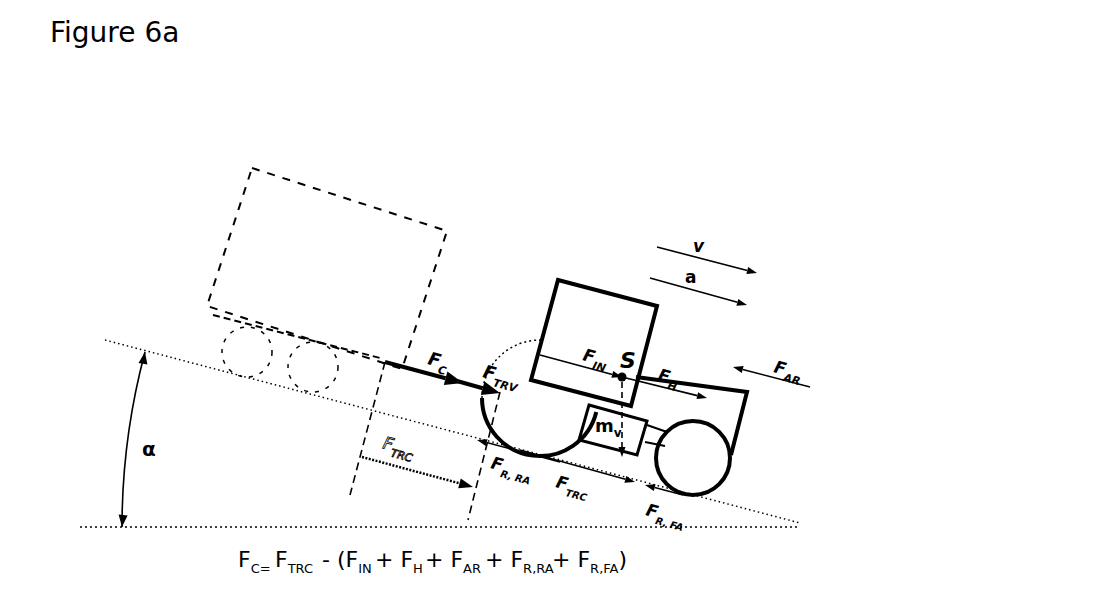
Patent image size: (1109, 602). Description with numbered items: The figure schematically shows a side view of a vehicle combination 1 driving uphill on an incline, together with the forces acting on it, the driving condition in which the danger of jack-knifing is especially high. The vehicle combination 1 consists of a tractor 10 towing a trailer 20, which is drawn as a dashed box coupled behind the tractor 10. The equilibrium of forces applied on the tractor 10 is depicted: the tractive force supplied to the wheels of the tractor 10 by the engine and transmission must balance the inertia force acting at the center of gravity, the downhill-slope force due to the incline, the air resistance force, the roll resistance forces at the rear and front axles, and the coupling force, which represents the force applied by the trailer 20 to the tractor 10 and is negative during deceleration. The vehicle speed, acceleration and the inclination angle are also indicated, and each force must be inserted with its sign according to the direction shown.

The vehicle combination 1 is at (519, 207).
The tractor 10 is at (693, 383).
The trailer 20 is at (252, 200).